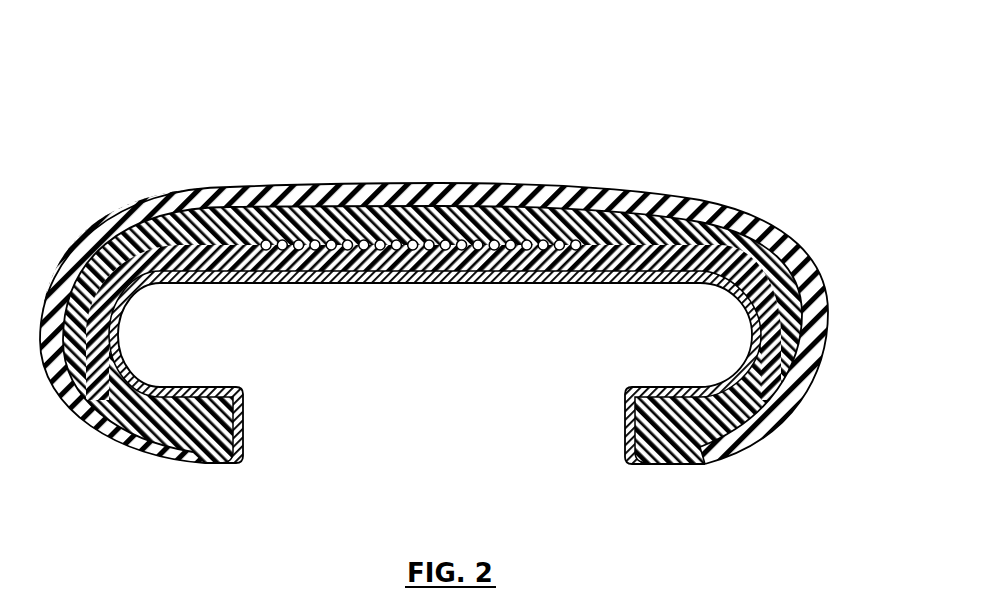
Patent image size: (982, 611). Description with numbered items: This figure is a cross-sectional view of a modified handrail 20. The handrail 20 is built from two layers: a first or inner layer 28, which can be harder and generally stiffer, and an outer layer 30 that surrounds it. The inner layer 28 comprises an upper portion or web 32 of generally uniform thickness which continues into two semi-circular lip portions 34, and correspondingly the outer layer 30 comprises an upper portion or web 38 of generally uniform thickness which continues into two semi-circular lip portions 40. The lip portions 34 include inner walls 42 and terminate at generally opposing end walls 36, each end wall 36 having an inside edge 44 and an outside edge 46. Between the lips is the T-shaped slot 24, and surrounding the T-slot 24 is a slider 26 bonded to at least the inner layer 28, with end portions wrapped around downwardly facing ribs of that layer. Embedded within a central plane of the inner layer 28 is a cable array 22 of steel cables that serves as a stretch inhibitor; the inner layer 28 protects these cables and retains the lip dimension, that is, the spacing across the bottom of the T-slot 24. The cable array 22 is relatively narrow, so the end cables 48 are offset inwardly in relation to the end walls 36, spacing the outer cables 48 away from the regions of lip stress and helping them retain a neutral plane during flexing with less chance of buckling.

The handrail 20 is at (448, 293).
The cable array 22 is at (508, 188).
The T-slot 24 is at (408, 357).
The slider 26 is at (527, 285).
The inner layer 28 is at (773, 410).
The outer layer 30 is at (806, 245).
The web 32 is at (375, 195).
The lip portions 34 is at (158, 460).
The end walls 36 is at (247, 430).
The web 38 is at (452, 185).
The lip portions 40 is at (75, 428).
The inner walls 42 is at (172, 392).
The inside edge 44 is at (237, 392).
The outside edge 46 is at (245, 463).
The end cables 48 is at (250, 190).